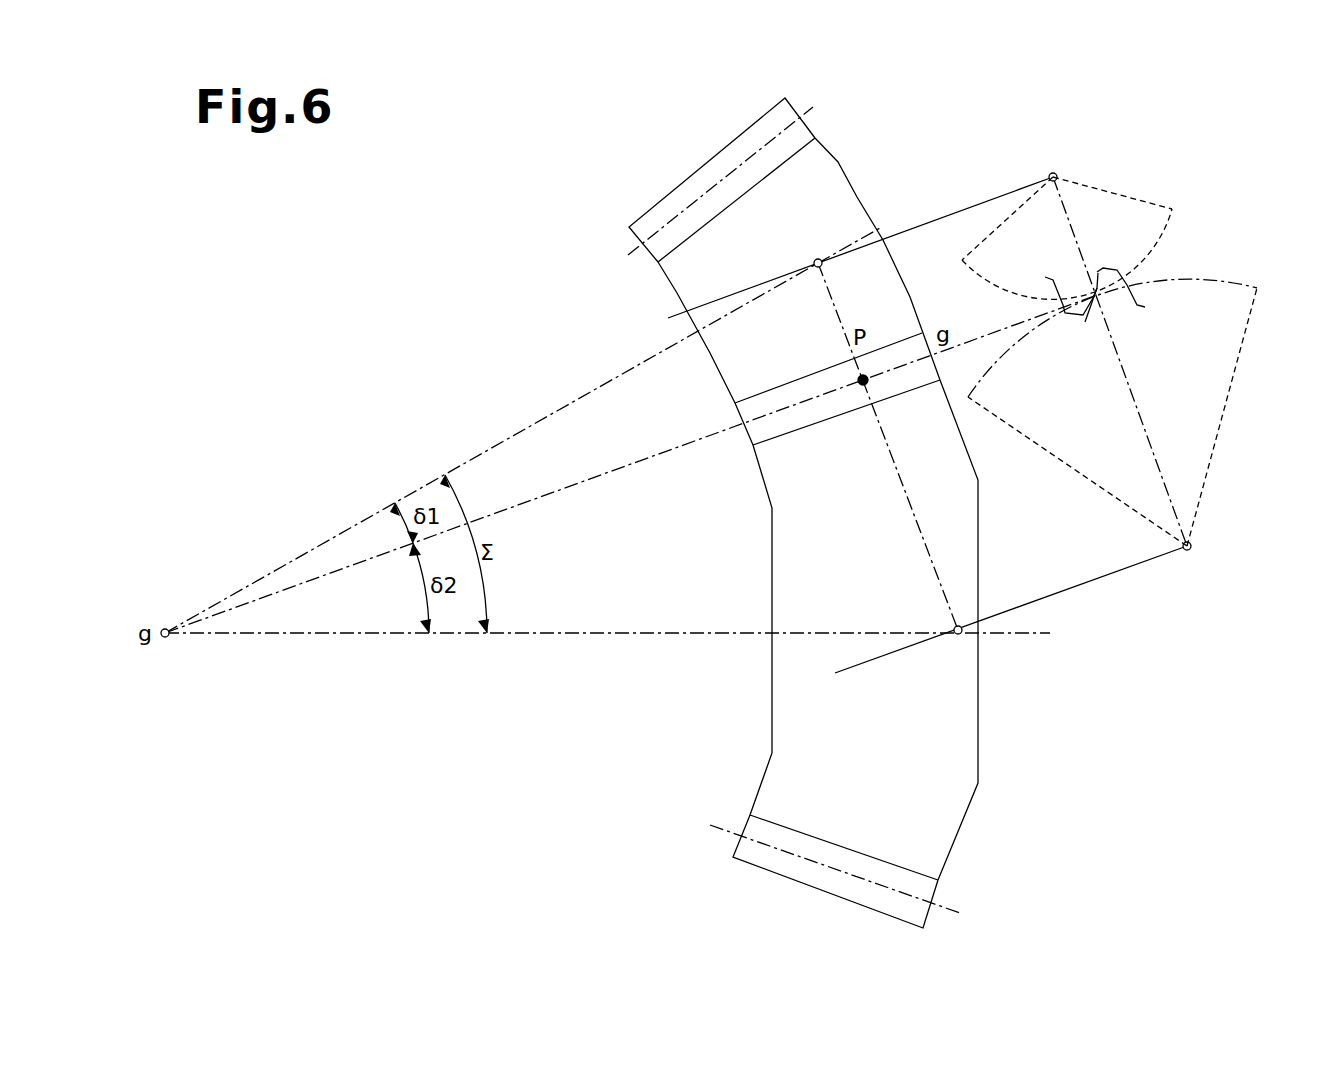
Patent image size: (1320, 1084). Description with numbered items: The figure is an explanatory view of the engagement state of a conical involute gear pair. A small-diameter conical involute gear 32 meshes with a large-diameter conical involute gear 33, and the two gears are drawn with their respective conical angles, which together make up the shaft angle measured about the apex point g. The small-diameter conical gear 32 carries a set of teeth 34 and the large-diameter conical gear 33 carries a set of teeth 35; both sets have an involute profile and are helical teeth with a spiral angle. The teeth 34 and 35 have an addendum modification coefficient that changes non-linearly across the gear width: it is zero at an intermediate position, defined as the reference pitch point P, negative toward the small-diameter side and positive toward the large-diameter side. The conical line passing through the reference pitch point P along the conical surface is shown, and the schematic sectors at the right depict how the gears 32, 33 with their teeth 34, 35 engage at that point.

The small-diameter conical involute gear 32 is at (838, 162).
The large-diameter conical involute gear 33 is at (980, 713).
The teeth 34 is at (682, 180).
The teeth 35 is at (923, 922).